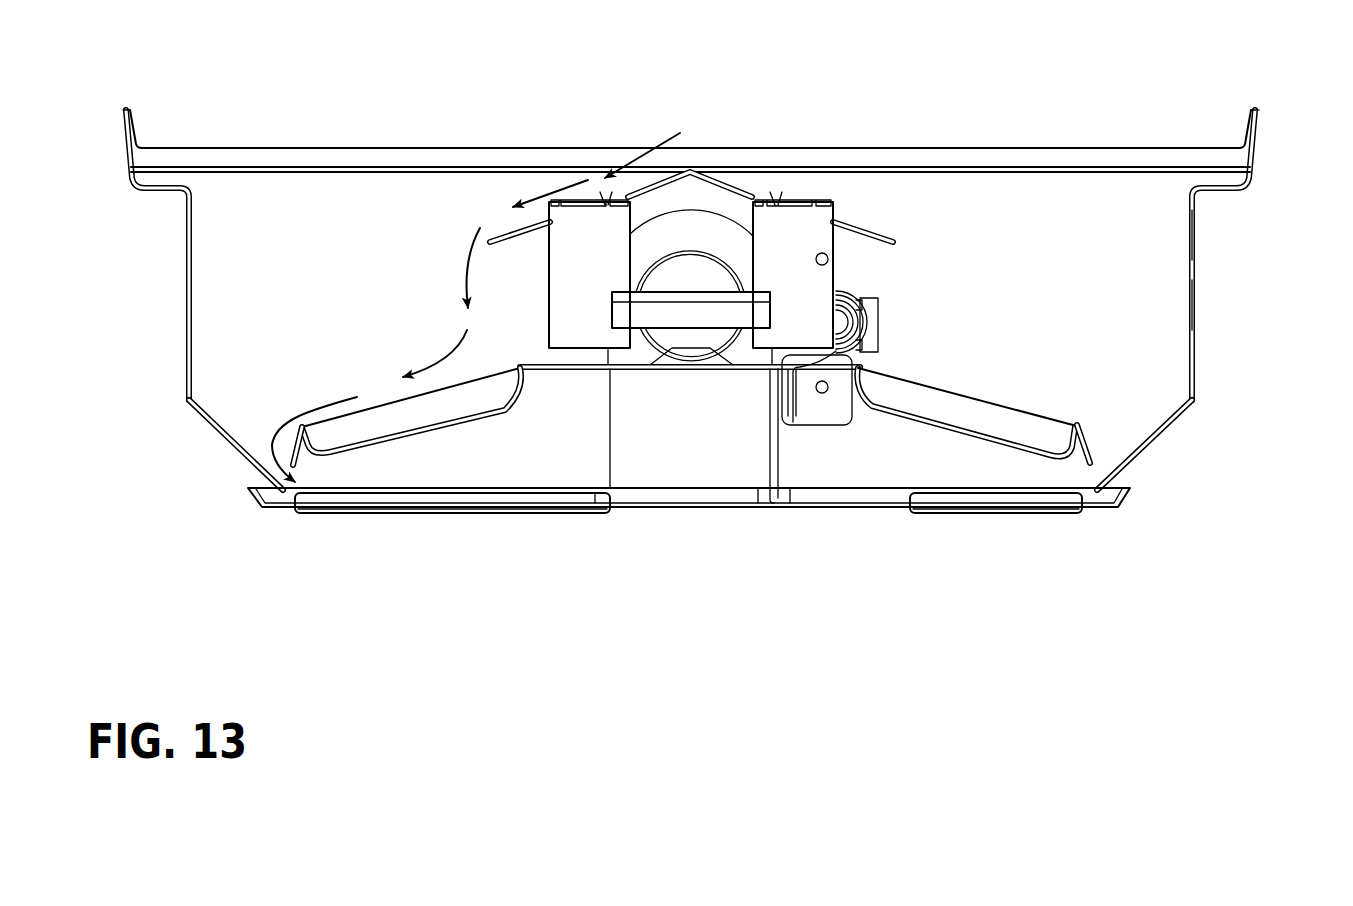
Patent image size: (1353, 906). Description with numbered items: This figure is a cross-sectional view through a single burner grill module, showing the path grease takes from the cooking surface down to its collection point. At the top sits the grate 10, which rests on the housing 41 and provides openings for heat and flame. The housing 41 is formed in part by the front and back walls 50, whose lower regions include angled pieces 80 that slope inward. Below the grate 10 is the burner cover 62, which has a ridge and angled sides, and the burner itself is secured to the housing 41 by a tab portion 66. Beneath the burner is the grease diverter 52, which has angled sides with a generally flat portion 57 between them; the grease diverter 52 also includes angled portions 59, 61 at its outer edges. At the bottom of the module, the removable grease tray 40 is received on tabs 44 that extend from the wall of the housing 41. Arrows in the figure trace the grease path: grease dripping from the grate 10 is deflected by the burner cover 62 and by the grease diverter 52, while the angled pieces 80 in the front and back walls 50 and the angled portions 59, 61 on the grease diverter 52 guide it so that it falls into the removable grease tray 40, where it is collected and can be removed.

The grate 10 is at (990, 147).
The removable grease tray 40 is at (280, 508).
The housing 41 is at (1198, 243).
The tabs 44 is at (460, 516).
The front and back walls 50 is at (1198, 312).
The grease diverter 52 is at (912, 377).
The generally flat portion 57 is at (535, 343).
The angled portion 59 is at (1017, 423).
The angled portion 61 is at (1090, 445).
The burner cover 62 is at (742, 197).
The tab portion 66 is at (697, 312).
The angled pieces 80 is at (233, 447).